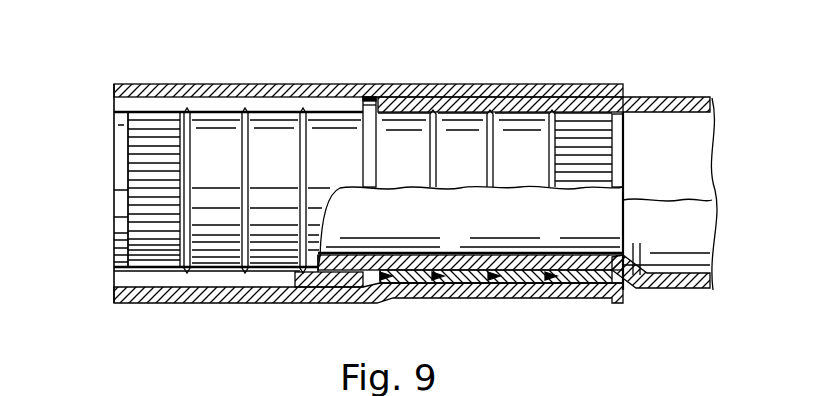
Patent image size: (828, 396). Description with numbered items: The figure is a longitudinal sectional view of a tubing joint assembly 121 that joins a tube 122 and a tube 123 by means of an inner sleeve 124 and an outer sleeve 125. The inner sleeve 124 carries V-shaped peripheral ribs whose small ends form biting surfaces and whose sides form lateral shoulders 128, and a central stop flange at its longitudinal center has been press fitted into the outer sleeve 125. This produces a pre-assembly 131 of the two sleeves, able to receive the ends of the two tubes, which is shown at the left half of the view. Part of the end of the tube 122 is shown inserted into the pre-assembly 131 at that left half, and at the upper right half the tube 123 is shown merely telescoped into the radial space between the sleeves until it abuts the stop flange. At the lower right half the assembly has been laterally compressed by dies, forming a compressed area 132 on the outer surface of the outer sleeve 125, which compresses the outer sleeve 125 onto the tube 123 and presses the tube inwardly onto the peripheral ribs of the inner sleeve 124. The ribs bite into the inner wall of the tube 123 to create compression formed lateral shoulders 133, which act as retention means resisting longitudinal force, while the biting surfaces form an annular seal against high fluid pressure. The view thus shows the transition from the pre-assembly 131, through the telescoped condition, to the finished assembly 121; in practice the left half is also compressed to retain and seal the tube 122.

The tubing joint assembly 121 is at (541, 76).
The tube 122 is at (315, 288).
The tube 123 is at (685, 98).
The inner sleeve 124 is at (622, 160).
The outer sleeve 125 is at (617, 85).
The lateral shoulders 128 is at (483, 98).
The pre-assembly 131 is at (112, 118).
The compressed area 132 is at (550, 297).
The compression formed lateral shoulders 133 is at (494, 284).